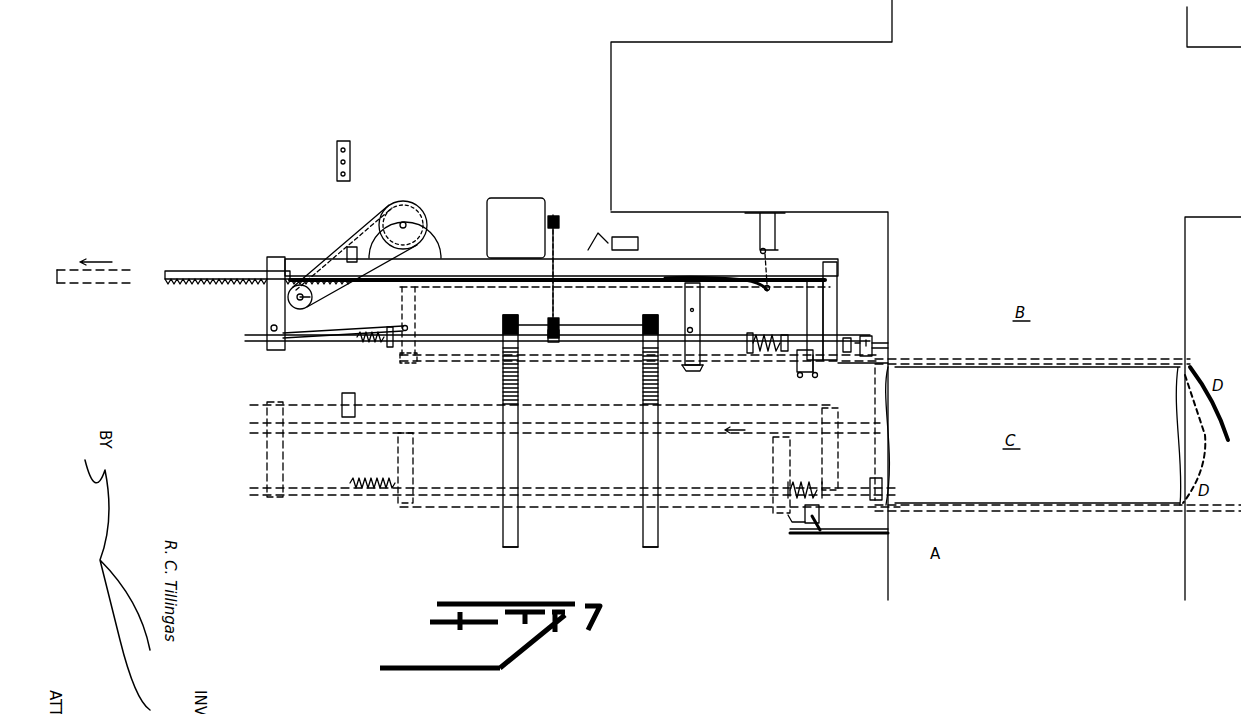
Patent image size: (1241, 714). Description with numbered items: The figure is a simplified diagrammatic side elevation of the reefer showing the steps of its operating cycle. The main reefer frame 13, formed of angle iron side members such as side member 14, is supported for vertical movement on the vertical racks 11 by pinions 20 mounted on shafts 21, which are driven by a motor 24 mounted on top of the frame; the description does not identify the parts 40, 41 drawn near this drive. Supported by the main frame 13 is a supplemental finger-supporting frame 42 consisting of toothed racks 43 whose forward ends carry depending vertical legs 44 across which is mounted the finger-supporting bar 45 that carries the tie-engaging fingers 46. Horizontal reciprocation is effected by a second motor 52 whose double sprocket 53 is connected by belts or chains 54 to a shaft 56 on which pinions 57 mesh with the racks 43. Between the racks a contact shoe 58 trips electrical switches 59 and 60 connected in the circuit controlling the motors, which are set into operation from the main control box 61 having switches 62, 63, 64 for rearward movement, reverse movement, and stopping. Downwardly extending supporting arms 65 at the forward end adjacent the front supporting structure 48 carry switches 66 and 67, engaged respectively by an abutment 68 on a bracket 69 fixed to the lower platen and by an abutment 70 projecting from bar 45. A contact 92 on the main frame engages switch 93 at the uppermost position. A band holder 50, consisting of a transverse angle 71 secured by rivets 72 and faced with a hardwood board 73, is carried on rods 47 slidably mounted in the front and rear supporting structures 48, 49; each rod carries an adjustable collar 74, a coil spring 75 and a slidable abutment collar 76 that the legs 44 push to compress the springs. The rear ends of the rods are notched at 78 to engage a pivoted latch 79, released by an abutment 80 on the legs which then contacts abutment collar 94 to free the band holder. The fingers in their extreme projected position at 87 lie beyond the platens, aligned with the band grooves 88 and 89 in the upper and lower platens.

The racks 11 is at (502, 382).
The main reefer frame 13 is at (849, 255).
The angle iron side member 14 is at (652, 268).
The pinions 20 is at (505, 316).
The shafts 21 is at (566, 324).
The motor 24 is at (513, 210).
The drive shaft 40 is at (558, 242).
The coupling 41 is at (549, 332).
The supplemental finger-supporting frame 42 is at (631, 298).
The toothed racks 43 is at (216, 270).
The depending vertical legs 44 is at (697, 318).
The finger-supporting bar 45 is at (688, 368).
The tie-engaging fingers 46 is at (440, 364).
The rods 47 is at (718, 340).
The front supporting structure 48 is at (838, 308).
The rear supporting structure 49 is at (267, 300).
The band holder 50 is at (867, 343).
The second motor 52 is at (382, 190).
The double sprocket 53 is at (418, 205).
The belts or chains 54 is at (362, 236).
The shaft 56 is at (307, 305).
The pinion 57 is at (318, 297).
The contact shoe 58 is at (706, 275).
The electrical switch 59 is at (772, 250).
The electrical switch 60 is at (346, 254).
The main control box 61 is at (352, 152).
The switch 62 is at (338, 149).
The switch 63 is at (338, 161).
The switch 64 is at (338, 174).
The supporting arms 65 is at (815, 300).
The switch 66 is at (820, 365).
The switch 67 is at (806, 376).
The abutment 68 is at (820, 528).
The bracket 69 is at (855, 537).
The abutment 70 is at (703, 369).
The transverse angle 71 is at (862, 340).
The rivets 72 is at (848, 338).
The hardwood board 73 is at (875, 345).
The adjustable collar 74 is at (790, 362).
The coil springs 75 is at (784, 344).
The slidable abutment collars 76 is at (755, 336).
The notches 78 is at (380, 342).
The pivoted latch 79 is at (392, 327).
The abutment 80 is at (408, 328).
The extreme projected position 87 is at (1196, 366).
The band grooves 88 is at (1065, 360).
The band grooves 89 is at (1100, 513).
The contact 92 is at (590, 247).
The switch 93 is at (616, 236).
The abutment collar 94 is at (388, 352).